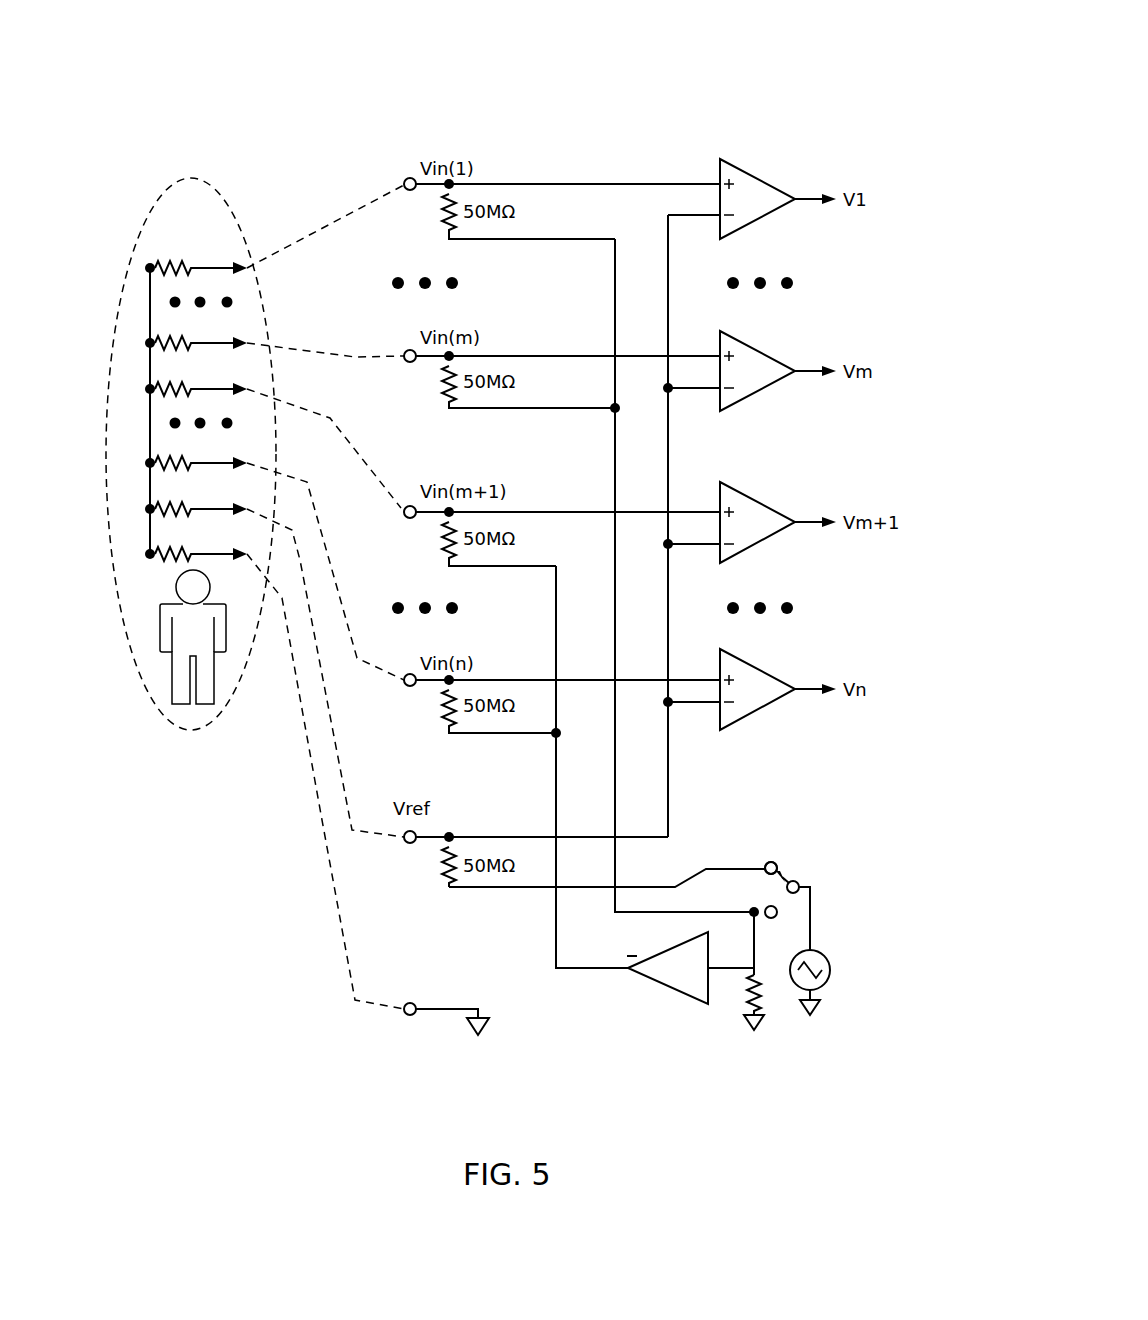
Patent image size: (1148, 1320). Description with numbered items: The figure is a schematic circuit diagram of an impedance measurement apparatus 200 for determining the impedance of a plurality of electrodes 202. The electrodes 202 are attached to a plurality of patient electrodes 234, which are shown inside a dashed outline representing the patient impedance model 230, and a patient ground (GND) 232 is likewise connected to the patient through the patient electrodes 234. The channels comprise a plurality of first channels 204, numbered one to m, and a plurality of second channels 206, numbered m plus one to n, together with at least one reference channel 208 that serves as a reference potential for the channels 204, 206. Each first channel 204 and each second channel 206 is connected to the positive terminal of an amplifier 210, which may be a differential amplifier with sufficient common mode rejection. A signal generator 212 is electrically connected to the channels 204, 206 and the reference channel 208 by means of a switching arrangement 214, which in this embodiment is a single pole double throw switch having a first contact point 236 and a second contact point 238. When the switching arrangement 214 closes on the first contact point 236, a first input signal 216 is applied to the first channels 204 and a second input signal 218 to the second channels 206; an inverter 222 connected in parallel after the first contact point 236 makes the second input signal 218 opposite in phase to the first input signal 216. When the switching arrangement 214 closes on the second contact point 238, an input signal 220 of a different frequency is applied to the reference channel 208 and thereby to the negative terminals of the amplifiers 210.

The impedance measurement apparatus 200 is at (619, 90).
The electrodes 202 is at (406, 178).
The first channels 204 is at (515, 178).
The second channels 206 is at (515, 506).
The reference channel 208 is at (515, 831).
The amplifier 210 is at (745, 177).
The signal generator 212 is at (825, 952).
The switching arrangement 214 is at (799, 872).
The first input signal 216 is at (693, 912).
The second input signal 218 is at (572, 972).
The input signal 220 is at (752, 868).
The inverter 222 is at (657, 984).
The patient impedance model 230 is at (178, 180).
The patient ground 232 is at (410, 1016).
The patient electrodes 234 is at (240, 265).
The first contact point 236 is at (780, 910).
The second contact point 238 is at (771, 861).